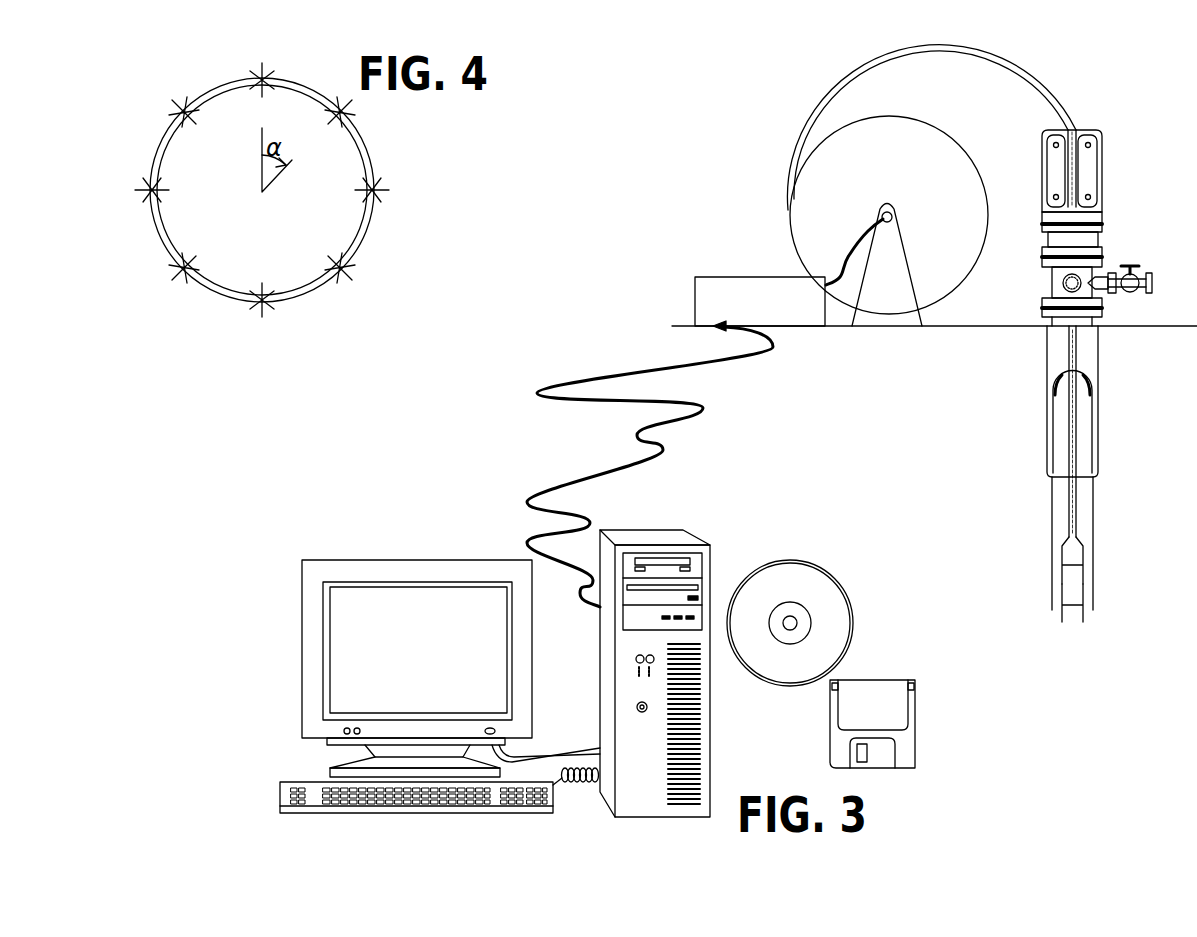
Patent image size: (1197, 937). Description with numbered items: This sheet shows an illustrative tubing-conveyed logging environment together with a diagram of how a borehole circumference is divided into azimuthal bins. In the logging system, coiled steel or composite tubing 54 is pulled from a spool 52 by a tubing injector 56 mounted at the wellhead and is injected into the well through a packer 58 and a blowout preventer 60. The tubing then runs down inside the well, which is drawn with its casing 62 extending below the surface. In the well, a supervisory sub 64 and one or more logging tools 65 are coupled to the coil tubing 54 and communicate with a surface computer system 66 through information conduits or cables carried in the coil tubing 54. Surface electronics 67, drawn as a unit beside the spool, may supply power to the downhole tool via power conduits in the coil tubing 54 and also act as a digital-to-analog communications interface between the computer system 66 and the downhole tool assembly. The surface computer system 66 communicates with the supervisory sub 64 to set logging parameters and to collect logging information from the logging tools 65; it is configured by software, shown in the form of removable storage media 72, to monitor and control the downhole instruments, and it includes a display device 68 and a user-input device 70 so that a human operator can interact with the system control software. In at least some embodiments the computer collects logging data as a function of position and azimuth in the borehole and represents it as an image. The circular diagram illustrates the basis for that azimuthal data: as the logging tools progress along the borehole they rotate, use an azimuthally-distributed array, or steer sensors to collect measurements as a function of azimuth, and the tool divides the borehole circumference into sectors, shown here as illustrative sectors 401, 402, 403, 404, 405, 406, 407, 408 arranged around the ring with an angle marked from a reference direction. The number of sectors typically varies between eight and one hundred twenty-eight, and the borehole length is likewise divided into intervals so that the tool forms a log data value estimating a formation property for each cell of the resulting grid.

In FIG. 3, the spool 52 is at (885, 182).
In FIG. 3, the coil tubing 54 is at (832, 102).
In FIG. 3, the tubing injector 56 is at (1100, 158).
In FIG. 3, the packer 58 is at (1100, 238).
In FIG. 3, the blowout preventer 60 is at (1048, 283).
In FIG. 3, the well casing 62 is at (1093, 370).
In FIG. 3, the supervisory sub 64 is at (1083, 551).
In FIG. 3, the logging tools 65 is at (1083, 591).
In FIG. 3, the surface computer system 66 is at (600, 703).
In FIG. 3, the surface electronics 67 is at (737, 276).
In FIG. 3, the display device 68 is at (322, 740).
In FIG. 3, the user-input device 70 is at (318, 810).
In FIG. 3, the removable storage media 72 is at (830, 698).
In FIG. 4, the sector 401 is at (288, 77).
In FIG. 4, the sector 402 is at (363, 123).
In FIG. 4, the sector 403 is at (378, 218).
In FIG. 4, the sector 404 is at (329, 287).
In FIG. 4, the sector 405 is at (236, 302).
In FIG. 4, the sector 406 is at (162, 259).
In FIG. 4, the sector 407 is at (147, 165).
In FIG. 4, the sector 408 is at (193, 92).